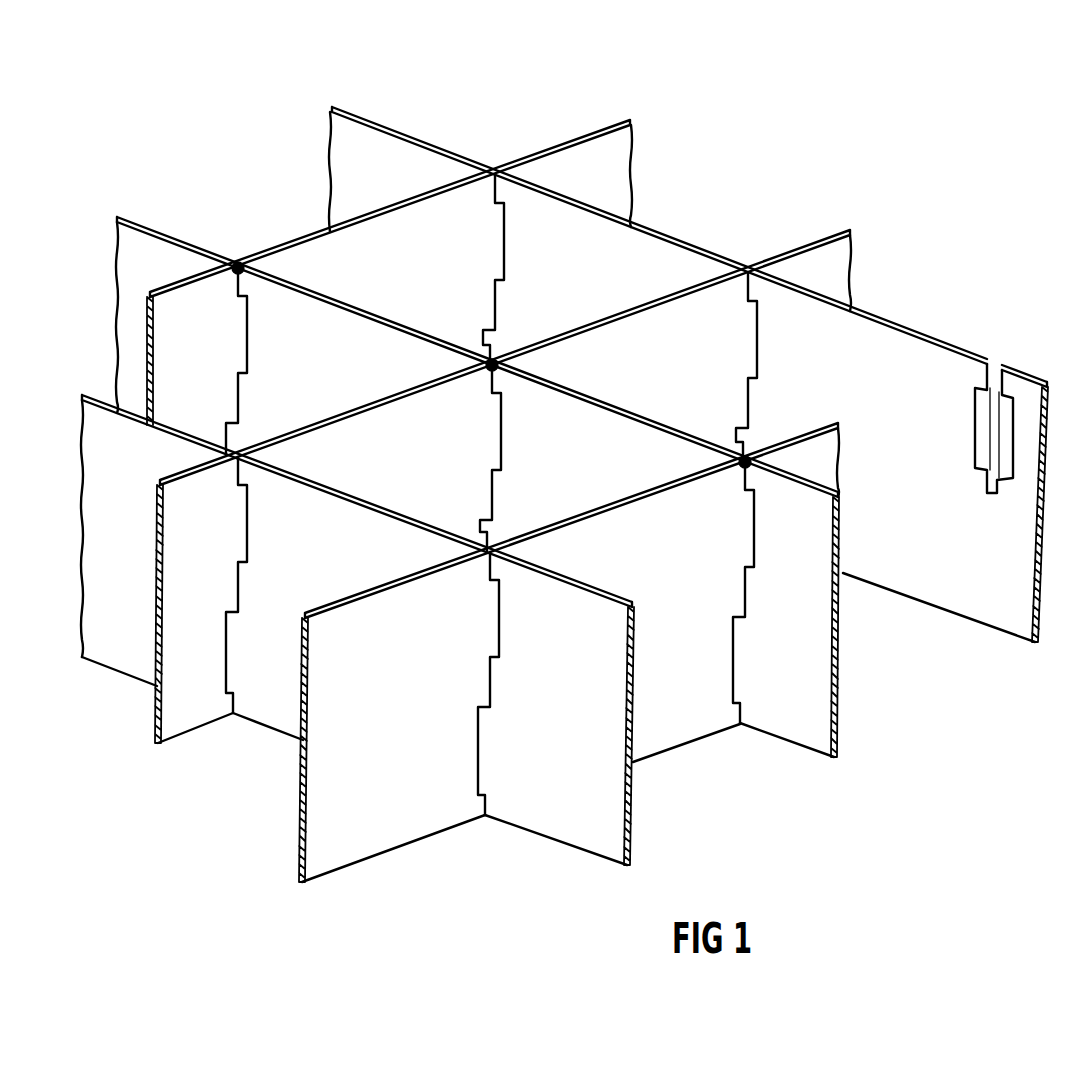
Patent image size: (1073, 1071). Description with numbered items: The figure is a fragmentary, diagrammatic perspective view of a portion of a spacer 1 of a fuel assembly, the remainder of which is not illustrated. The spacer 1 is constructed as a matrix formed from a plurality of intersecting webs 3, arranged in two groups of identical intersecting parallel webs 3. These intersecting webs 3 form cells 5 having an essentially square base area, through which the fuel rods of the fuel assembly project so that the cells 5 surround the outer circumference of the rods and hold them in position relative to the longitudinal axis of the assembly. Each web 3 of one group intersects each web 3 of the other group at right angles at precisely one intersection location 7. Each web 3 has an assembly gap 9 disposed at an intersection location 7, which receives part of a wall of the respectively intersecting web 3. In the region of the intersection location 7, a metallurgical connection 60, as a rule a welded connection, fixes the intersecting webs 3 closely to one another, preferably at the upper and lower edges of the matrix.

The spacer 1 is at (222, 131).
The web 3 is at (600, 150).
The cell 5 is at (422, 298).
The intersection location 7 is at (495, 173).
The assembly gap 9 is at (1001, 362).
The metallurgical connection 60 is at (238, 266).